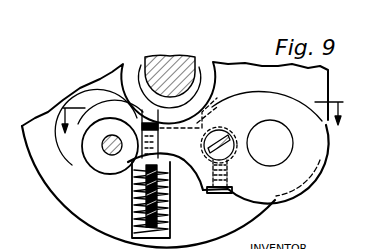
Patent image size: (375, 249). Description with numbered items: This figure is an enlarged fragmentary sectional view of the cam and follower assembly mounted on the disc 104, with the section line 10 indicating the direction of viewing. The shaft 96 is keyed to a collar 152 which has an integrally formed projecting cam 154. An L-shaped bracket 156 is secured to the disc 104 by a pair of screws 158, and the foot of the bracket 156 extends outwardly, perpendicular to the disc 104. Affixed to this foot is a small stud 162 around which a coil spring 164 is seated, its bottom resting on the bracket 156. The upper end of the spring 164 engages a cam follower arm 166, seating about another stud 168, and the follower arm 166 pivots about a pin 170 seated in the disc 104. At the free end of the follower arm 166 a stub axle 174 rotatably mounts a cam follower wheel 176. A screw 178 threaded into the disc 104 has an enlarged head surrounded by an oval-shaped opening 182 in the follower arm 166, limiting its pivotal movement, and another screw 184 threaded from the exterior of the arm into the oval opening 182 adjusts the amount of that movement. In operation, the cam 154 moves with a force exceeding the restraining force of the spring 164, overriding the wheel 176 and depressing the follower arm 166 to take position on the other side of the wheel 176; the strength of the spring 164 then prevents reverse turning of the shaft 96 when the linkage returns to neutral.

The section line 10- 10 is at (198, 128).
The shaft 96 is at (174, 55).
The disc 104 is at (262, 218).
The collar 152 is at (203, 63).
The cam 154 is at (208, 104).
The L-shaped bracket 156 is at (170, 228).
The screws 158 is at (168, 194).
The stud 162 is at (167, 214).
The coil spring 164 is at (131, 213).
The cam follower arm 166 is at (297, 100).
The stud 168 is at (140, 113).
The pin 170 is at (283, 153).
The stub axle 174 is at (107, 151).
The cam follower wheel 176 is at (108, 175).
The screw 178 is at (220, 133).
The oval-shaped opening 182 is at (228, 178).
The screw 184 is at (222, 194).